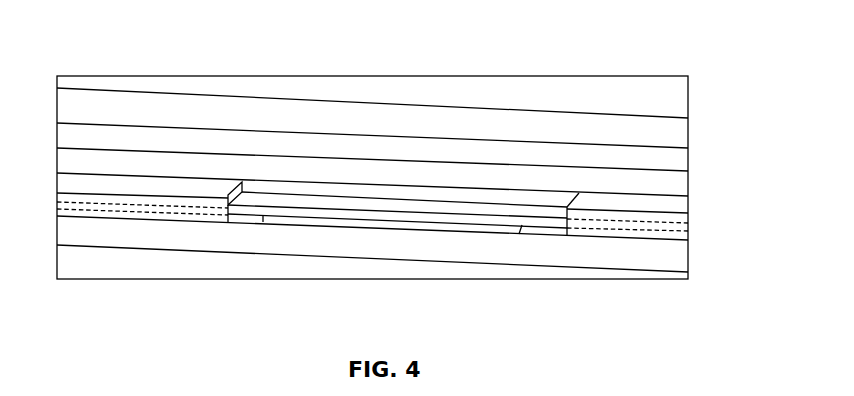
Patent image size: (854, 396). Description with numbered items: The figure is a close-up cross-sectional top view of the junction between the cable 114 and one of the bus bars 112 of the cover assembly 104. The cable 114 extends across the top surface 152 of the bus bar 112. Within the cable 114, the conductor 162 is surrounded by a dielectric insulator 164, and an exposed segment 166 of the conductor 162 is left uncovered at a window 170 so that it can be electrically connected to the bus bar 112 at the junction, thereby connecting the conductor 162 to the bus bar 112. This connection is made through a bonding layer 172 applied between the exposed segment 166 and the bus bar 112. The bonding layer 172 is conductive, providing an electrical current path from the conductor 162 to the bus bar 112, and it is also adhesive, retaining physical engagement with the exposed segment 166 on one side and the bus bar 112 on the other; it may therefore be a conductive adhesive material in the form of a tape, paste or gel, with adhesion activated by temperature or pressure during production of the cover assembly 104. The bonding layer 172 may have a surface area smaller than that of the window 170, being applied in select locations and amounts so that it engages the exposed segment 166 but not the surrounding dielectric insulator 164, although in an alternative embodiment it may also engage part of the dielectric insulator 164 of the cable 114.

The cover assembly 104 is at (627, 38).
The bus bar 112 is at (628, 253).
The cable 114 is at (643, 190).
The top surface 152 is at (563, 236).
The conductor 162 is at (200, 213).
The dielectric insulator 164 is at (228, 195).
The exposed segment 166 is at (319, 200).
The window 170 is at (233, 220).
The bonding layer 172 is at (345, 223).